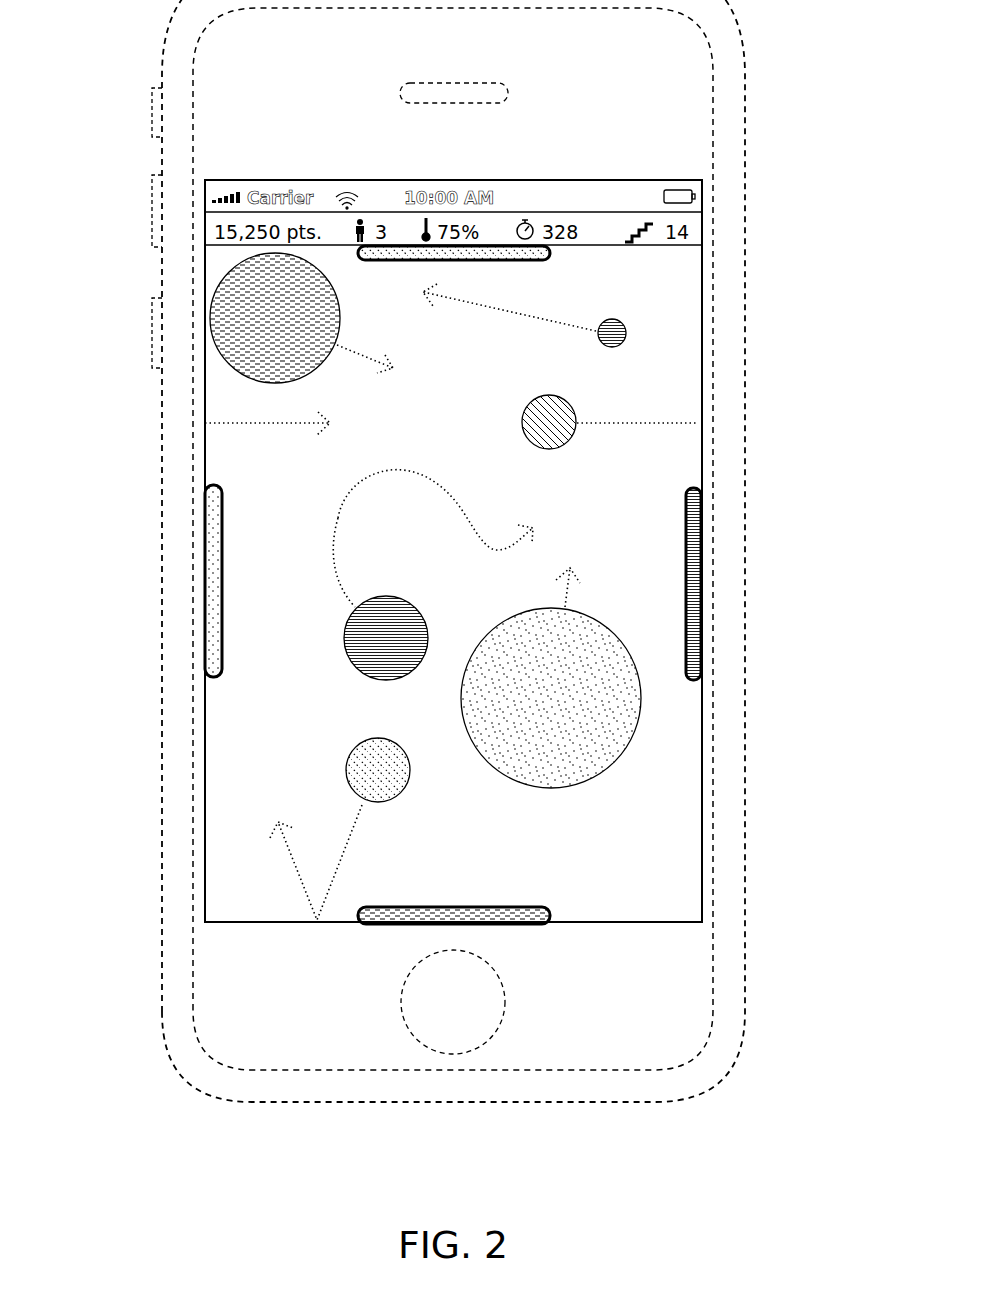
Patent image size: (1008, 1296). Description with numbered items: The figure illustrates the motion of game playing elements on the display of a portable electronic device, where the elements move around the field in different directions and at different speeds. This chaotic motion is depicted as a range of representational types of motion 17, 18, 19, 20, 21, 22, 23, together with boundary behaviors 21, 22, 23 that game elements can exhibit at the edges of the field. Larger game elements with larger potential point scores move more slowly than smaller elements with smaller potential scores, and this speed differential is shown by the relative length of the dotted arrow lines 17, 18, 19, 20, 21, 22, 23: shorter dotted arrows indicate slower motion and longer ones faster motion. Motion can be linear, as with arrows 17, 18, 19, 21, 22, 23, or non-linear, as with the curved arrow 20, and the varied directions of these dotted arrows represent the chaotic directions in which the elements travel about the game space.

The linear motion 17 is at (363, 357).
The linear motion 18 is at (535, 315).
The linear motion 19 is at (570, 593).
The non-linear motion 20 is at (338, 518).
The boundary behavior 21 is at (295, 872).
The boundary behavior 22 is at (633, 423).
The boundary behavior 23 is at (288, 423).